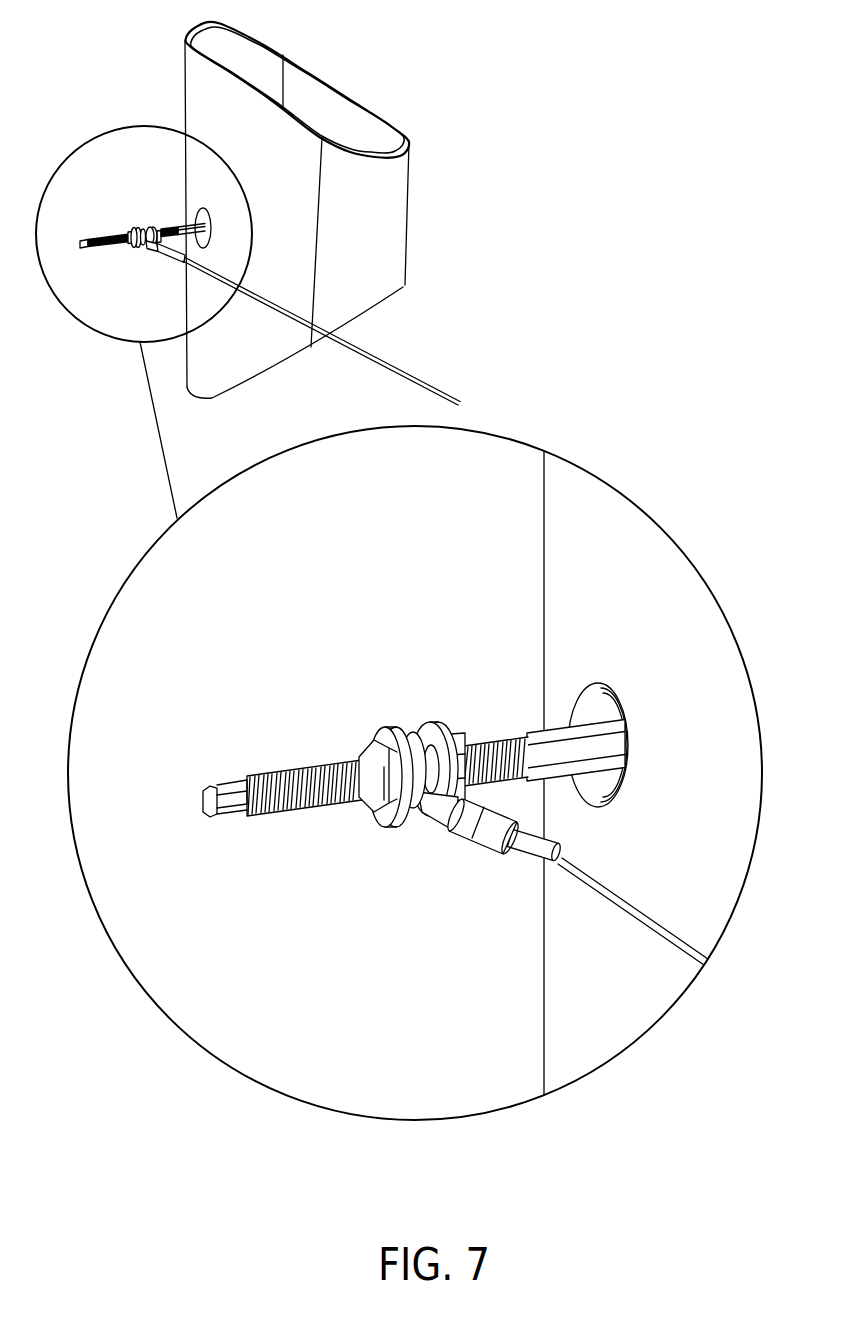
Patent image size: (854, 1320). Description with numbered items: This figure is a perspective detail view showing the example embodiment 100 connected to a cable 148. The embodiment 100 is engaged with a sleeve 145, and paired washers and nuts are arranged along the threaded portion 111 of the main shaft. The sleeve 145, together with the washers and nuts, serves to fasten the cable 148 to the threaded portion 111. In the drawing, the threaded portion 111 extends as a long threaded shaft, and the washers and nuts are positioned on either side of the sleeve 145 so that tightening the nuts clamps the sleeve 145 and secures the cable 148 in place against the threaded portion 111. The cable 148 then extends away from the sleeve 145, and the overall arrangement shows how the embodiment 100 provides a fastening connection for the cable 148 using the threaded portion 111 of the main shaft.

The embodiment 100 is at (215, 715).
The threaded portion 111 is at (318, 812).
The sleeve 145 is at (420, 817).
The cable 148 is at (528, 856).